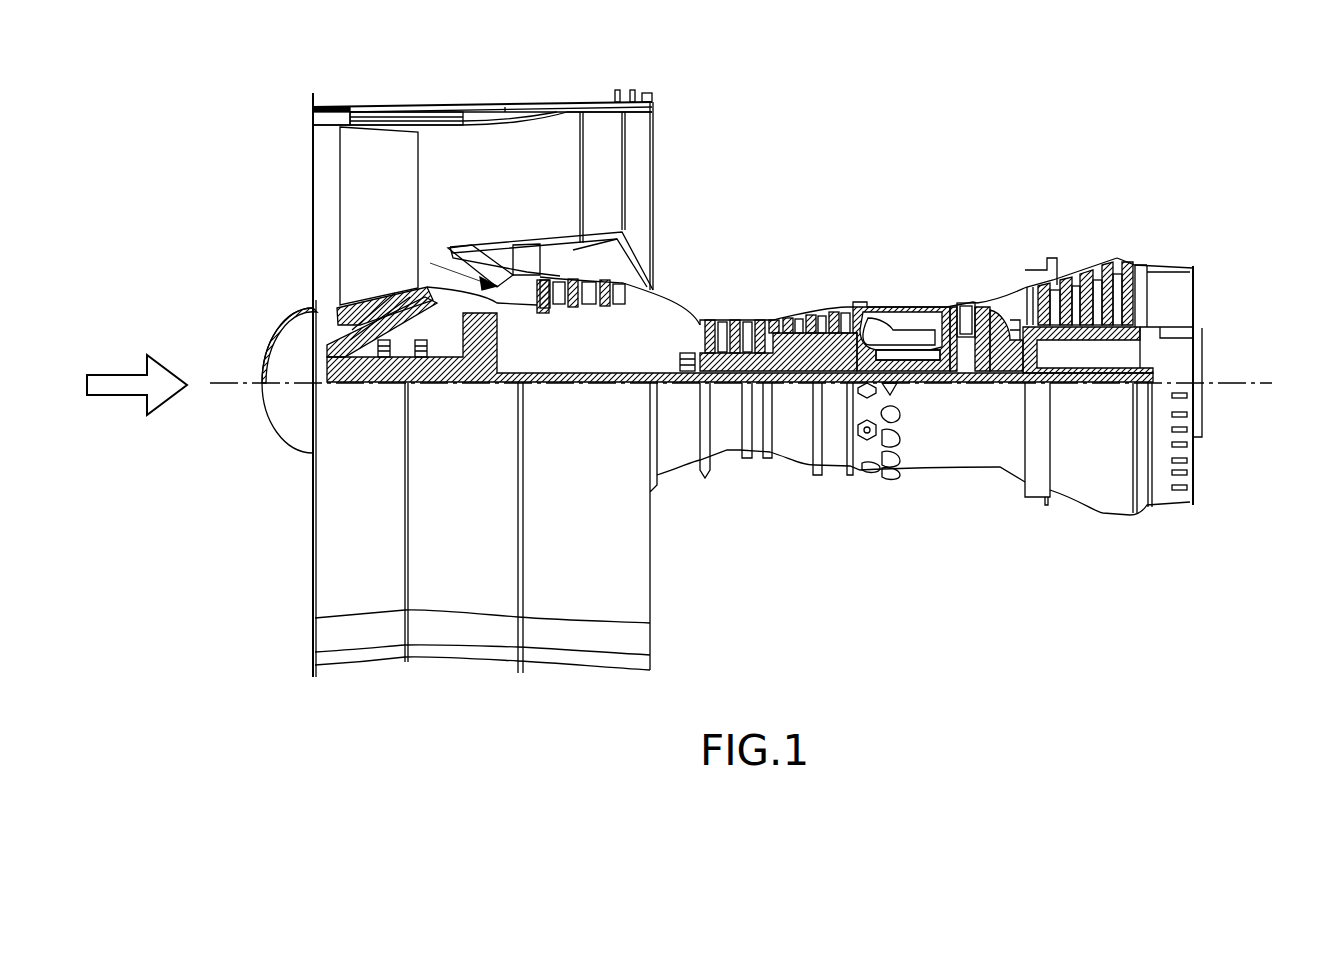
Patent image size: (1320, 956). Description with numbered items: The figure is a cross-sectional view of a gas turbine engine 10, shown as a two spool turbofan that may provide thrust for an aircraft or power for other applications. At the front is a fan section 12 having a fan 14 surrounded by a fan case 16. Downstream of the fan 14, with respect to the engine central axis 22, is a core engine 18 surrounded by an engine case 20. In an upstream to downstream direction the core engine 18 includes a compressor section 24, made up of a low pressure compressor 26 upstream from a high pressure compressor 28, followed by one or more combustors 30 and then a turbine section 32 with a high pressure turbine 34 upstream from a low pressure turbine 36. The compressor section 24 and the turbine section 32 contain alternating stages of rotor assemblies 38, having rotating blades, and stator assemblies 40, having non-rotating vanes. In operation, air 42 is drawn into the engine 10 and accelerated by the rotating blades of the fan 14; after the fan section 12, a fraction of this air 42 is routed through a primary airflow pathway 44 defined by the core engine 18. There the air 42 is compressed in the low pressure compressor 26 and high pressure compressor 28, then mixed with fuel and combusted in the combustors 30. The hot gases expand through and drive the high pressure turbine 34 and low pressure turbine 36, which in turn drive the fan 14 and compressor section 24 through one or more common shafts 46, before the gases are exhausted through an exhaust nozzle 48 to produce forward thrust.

The gas turbine engine 10 is at (1185, 122).
The fan section 12 is at (438, 84).
The fan 14 is at (358, 195).
The fan case 16 is at (567, 102).
The core engine 18 is at (890, 230).
The engine case 20 is at (980, 450).
The engine central axis 22 is at (1223, 381).
The compressor section 24 is at (697, 265).
The low pressure compressor 26 is at (598, 283).
The high pressure compressor 28 is at (768, 327).
The combustor 30 is at (893, 323).
The turbine section 32 is at (1051, 233).
The high pressure turbine 34 is at (963, 303).
The low pressure turbine 36 is at (1083, 267).
The rotor assemblies 38 is at (740, 320).
The stator assemblies 40 is at (797, 322).
The air 42 is at (117, 375).
The primary airflow pathway 44 is at (437, 270).
The common shafts 46 is at (672, 383).
The exhaust nozzle 48 is at (1170, 267).